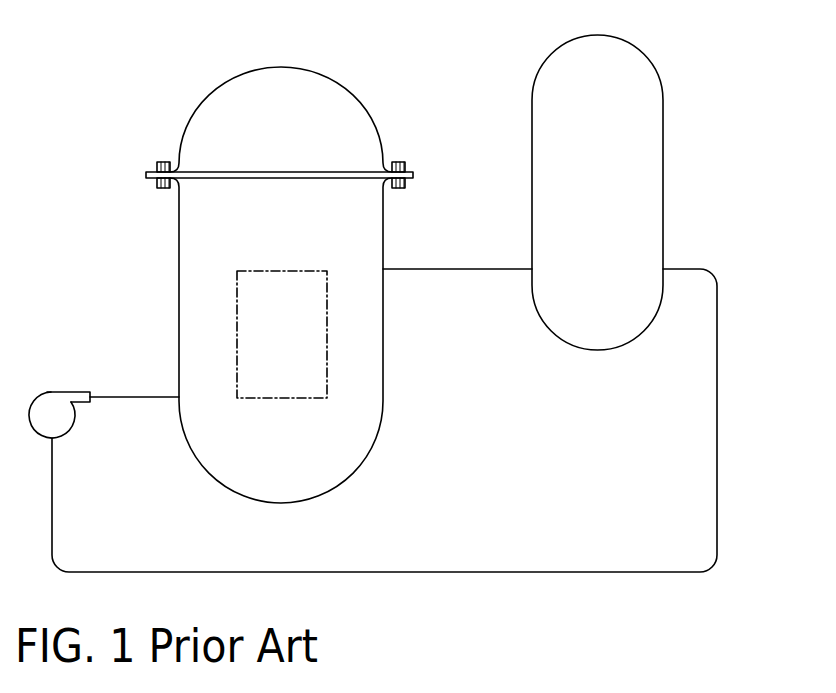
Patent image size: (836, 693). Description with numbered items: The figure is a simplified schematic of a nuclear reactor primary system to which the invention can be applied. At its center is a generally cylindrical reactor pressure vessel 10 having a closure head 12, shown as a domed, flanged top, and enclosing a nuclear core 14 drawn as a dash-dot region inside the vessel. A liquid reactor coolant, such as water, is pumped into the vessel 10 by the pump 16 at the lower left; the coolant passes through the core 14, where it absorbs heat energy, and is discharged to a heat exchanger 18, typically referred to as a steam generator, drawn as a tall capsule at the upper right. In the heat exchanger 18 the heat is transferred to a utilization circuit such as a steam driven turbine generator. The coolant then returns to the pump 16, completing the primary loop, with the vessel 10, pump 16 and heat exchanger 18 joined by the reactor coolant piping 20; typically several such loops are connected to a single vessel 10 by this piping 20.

The reactor pressure vessel 10 is at (296, 341).
The closure head 12 is at (190, 120).
The nuclear core 14 is at (237, 322).
The pump 16 is at (48, 390).
The heat exchanger 18 is at (663, 135).
The reactor coolant piping 20 is at (717, 507).